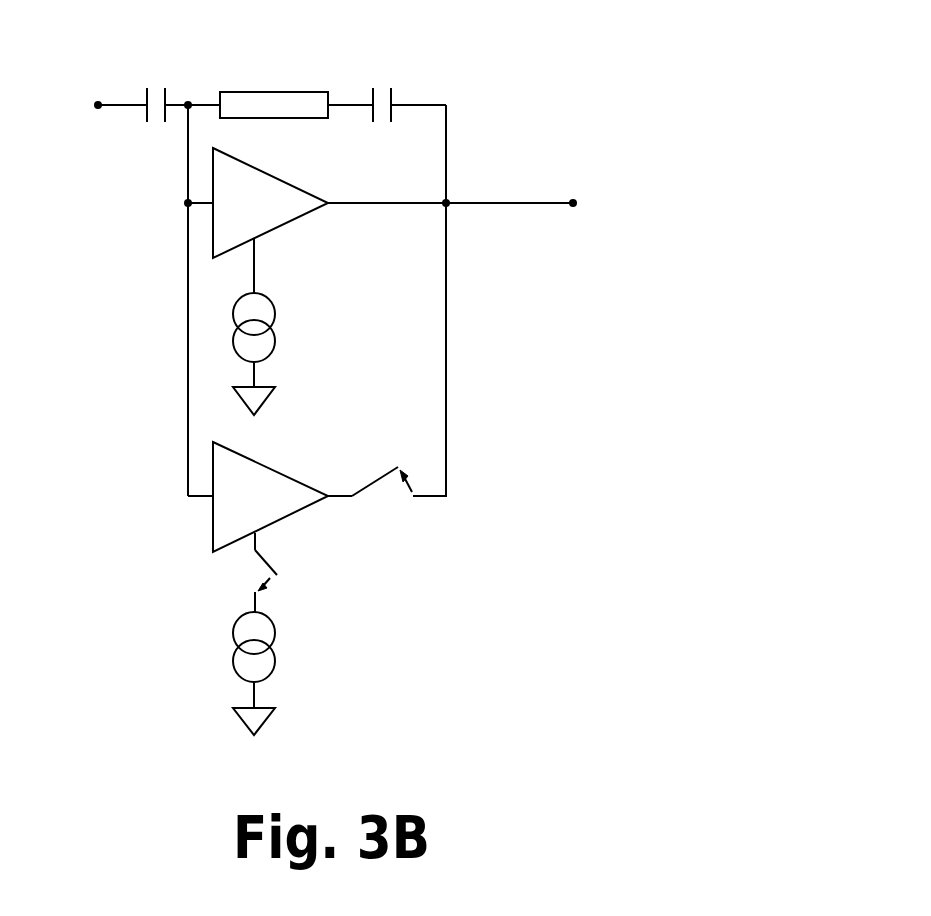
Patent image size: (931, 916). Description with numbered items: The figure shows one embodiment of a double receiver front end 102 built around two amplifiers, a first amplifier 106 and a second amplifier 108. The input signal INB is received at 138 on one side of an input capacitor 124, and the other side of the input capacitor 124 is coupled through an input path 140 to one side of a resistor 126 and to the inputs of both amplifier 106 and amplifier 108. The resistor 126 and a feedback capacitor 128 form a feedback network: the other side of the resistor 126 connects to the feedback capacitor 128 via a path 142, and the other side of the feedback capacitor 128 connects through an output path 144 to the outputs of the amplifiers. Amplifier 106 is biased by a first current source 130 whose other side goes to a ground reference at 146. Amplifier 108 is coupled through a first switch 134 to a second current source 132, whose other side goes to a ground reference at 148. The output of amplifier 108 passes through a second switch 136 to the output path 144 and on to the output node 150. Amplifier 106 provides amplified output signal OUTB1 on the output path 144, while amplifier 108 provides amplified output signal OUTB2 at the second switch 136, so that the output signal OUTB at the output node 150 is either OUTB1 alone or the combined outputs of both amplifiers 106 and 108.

The double receiver front end 102 is at (508, 75).
The amplifier 106 is at (266, 181).
The amplifier 108 is at (218, 538).
The input capacitor 124 is at (147, 88).
The resistor 126 is at (266, 92).
The feedback capacitor 128 is at (392, 98).
The first current source 130 is at (276, 312).
The second current source 132 is at (276, 633).
The first switch 134 is at (265, 558).
The second switch 136 is at (370, 486).
The input signal INB node 138 is at (99, 107).
The input path 140 is at (186, 206).
The path 142 is at (342, 102).
The output path 144 is at (444, 120).
The reference (ground) 146 is at (276, 388).
The reference (ground) 148 is at (276, 709).
The output node 150 is at (574, 201).